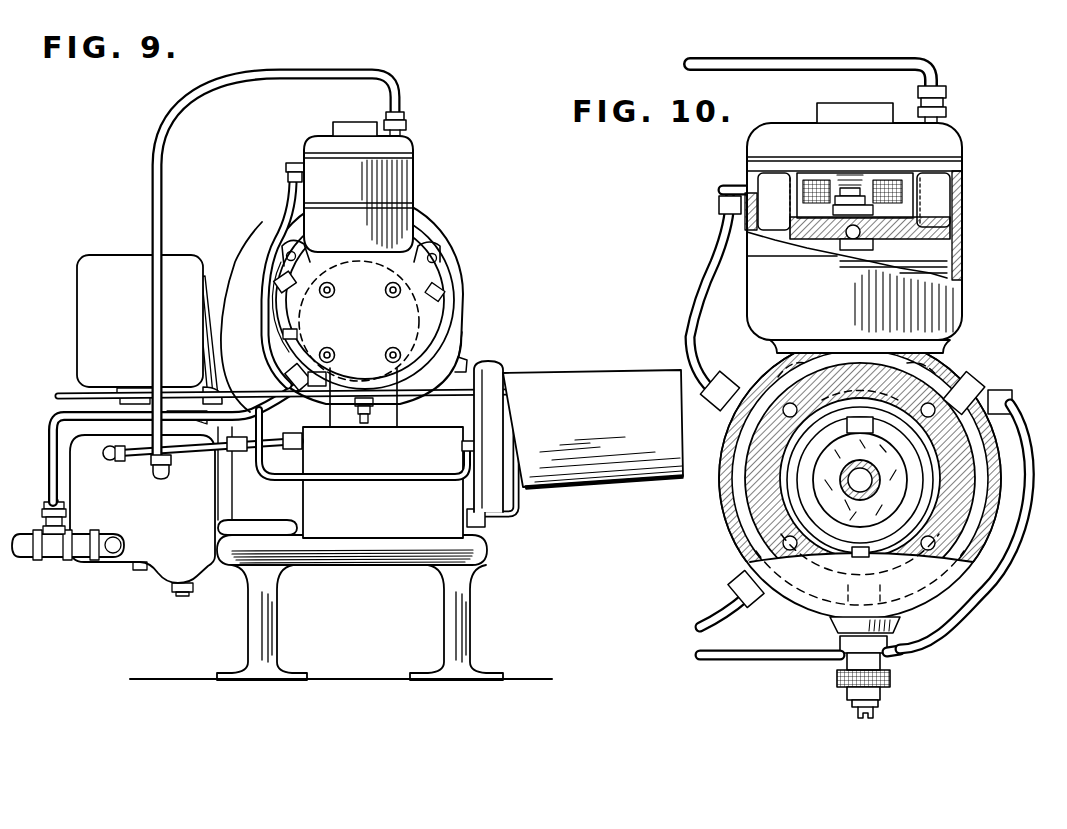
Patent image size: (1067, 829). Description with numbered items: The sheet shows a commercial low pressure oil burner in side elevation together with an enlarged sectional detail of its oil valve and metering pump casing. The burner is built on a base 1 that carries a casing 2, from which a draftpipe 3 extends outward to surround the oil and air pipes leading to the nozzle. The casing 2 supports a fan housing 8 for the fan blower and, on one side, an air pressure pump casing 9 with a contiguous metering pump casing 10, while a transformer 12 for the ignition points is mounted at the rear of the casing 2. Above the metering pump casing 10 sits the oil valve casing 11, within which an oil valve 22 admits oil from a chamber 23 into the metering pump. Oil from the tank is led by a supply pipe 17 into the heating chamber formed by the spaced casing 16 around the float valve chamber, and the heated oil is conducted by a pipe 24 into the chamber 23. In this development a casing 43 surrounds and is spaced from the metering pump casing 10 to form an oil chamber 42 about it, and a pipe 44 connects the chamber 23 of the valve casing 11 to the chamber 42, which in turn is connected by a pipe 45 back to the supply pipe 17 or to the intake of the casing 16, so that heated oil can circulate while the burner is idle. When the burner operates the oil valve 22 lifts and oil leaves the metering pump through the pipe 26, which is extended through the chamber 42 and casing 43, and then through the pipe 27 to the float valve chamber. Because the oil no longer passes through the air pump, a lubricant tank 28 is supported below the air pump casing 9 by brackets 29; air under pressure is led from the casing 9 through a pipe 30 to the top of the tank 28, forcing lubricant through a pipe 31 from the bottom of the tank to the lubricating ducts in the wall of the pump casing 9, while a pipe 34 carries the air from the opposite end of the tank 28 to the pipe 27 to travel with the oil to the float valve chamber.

In FIG. 9, the base 1 is at (318, 565).
In FIG. 9, the casing 2 is at (250, 513).
In FIG. 9, the draftpipe 3 is at (551, 386).
In FIG. 9, the fan housing 8 is at (437, 240).
In FIG. 9, the air pressure pump casing 9 is at (423, 272).
In FIG. 9, the metering pump casing 10 is at (425, 319).
In FIG. 10, the metering pump casing 10 is at (760, 533).
In FIG. 9, the oil valve casing 11 is at (412, 216).
In FIG. 10, the oil valve casing 11 is at (947, 303).
In FIG. 9, the transformer 12 is at (149, 339).
In FIG. 9, the casing 16 is at (70, 460).
In FIG. 9, the pipe 17 is at (27, 558).
In FIG. 10, the oil valve 22 is at (940, 207).
In FIG. 10, the chamber 23 is at (937, 188).
In FIG. 9, the pipe 24 is at (152, 221).
In FIG. 10, the pipe 24 is at (760, 62).
In FIG. 9, the pipe 26 is at (449, 361).
In FIG. 10, the pipe 26 is at (783, 660).
In FIG. 9, the pipe 27 is at (180, 457).
In FIG. 9, the tank 28 is at (364, 538).
In FIG. 9, the brackets 29 is at (402, 413).
In FIG. 9, the pipe 30 is at (273, 473).
In FIG. 9, the pipe 31 is at (520, 415).
In FIG. 9, the pipe 34 is at (273, 443).
In FIG. 10, the oil chamber 42 is at (743, 513).
In FIG. 9, the casing 43 is at (284, 306).
In FIG. 10, the casing 43 is at (718, 494).
In FIG. 9, the pipe 44 is at (266, 217).
In FIG. 10, the pipe 44 is at (693, 327).
In FIG. 9, the pipe 45 is at (247, 402).
In FIG. 10, the pipe 45 is at (715, 613).